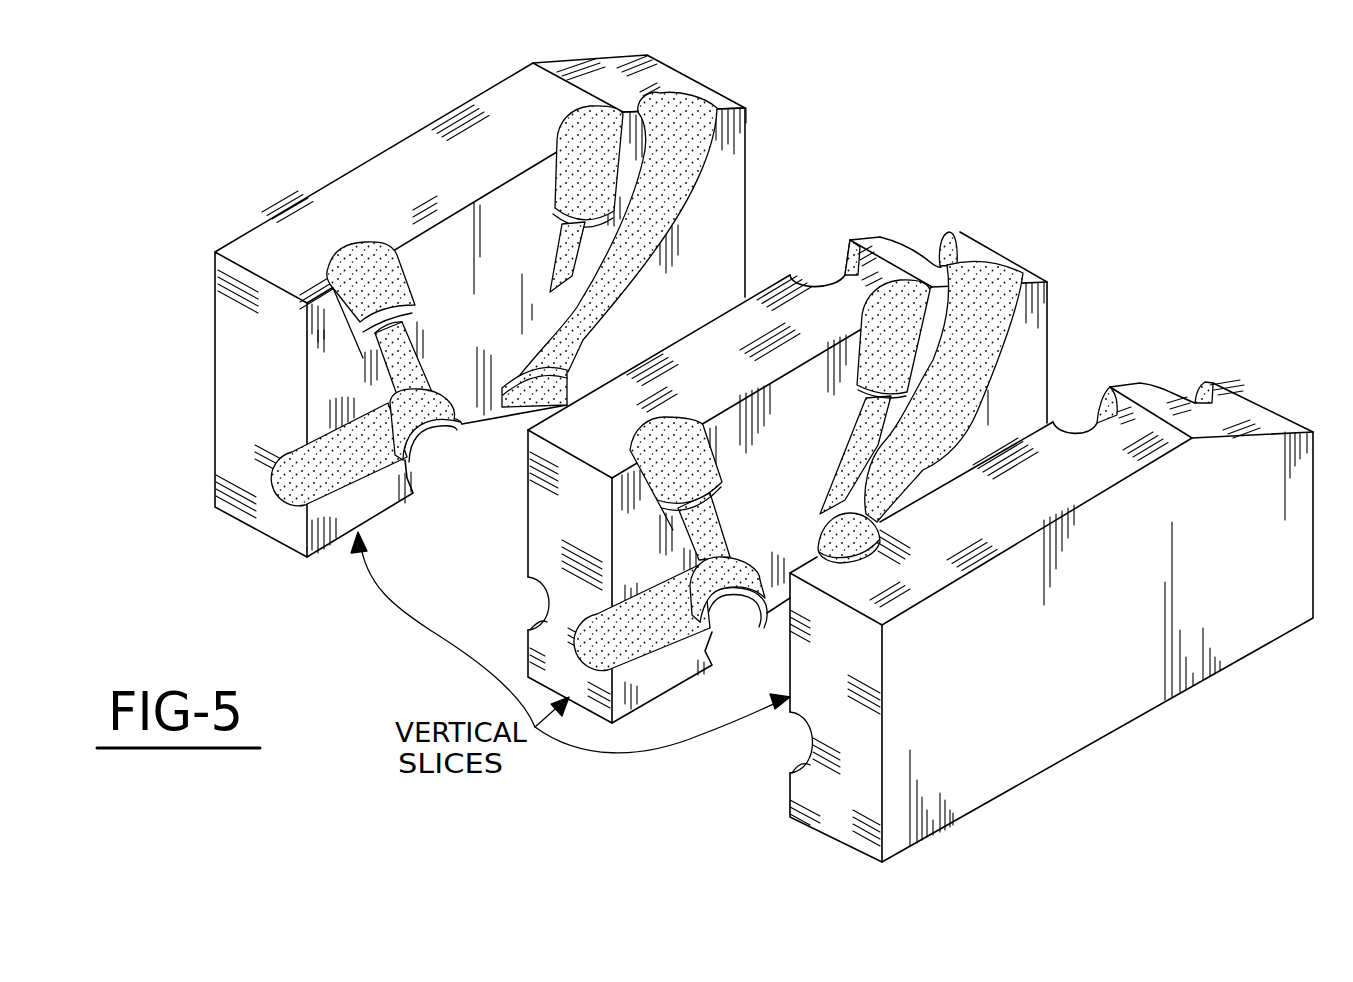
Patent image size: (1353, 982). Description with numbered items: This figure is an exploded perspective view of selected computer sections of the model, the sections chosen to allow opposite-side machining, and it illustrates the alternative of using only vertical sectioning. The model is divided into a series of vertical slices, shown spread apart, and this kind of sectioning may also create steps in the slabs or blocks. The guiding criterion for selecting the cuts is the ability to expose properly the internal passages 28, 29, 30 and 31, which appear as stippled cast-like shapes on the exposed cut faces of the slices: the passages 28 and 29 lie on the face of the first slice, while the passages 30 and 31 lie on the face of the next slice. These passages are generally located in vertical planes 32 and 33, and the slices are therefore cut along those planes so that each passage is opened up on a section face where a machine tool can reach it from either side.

The internal passage 28 is at (403, 470).
The internal passage 29 is at (590, 290).
The internal passage 30 is at (638, 633).
The internal passage 31 is at (957, 382).
The vertical plane 32 is at (453, 376).
The vertical plane 33 is at (790, 652).